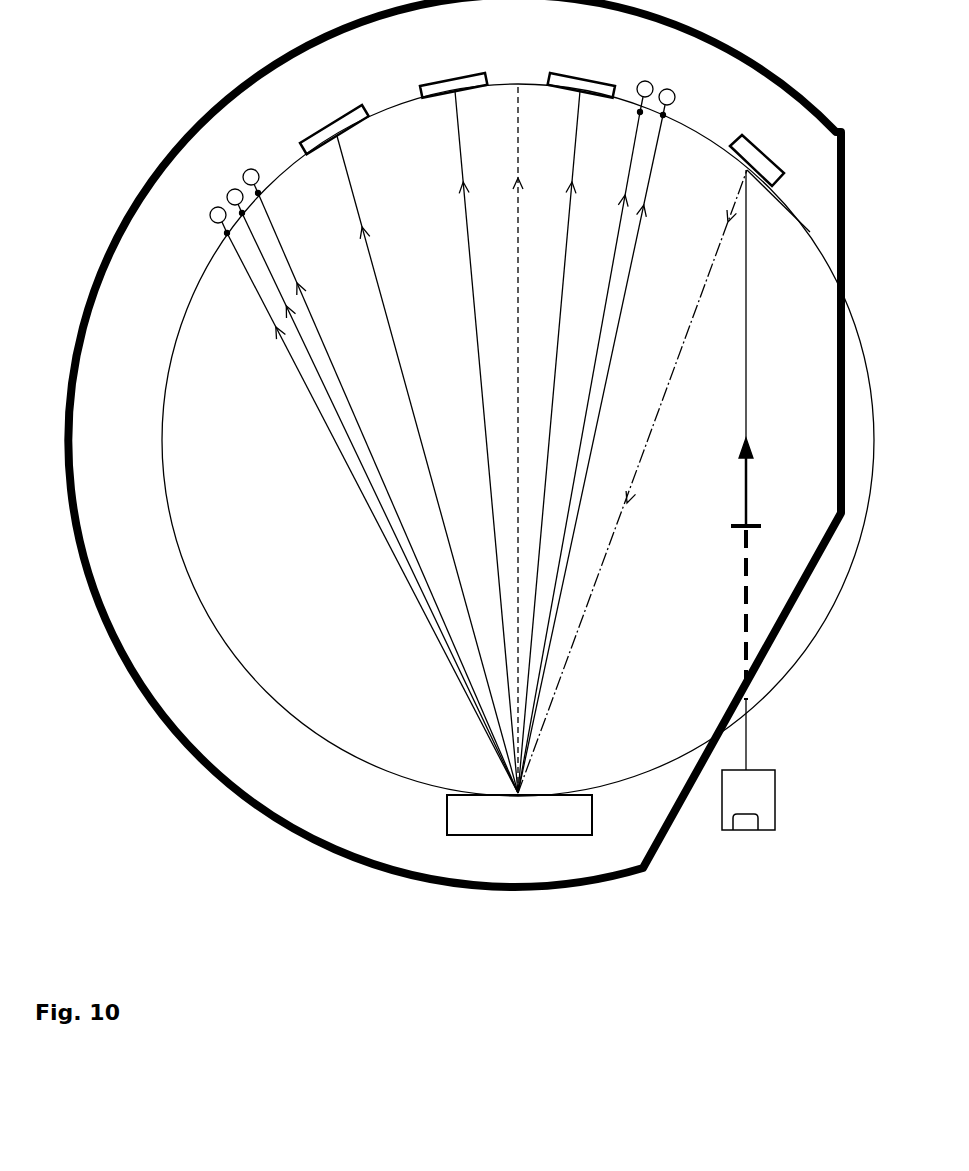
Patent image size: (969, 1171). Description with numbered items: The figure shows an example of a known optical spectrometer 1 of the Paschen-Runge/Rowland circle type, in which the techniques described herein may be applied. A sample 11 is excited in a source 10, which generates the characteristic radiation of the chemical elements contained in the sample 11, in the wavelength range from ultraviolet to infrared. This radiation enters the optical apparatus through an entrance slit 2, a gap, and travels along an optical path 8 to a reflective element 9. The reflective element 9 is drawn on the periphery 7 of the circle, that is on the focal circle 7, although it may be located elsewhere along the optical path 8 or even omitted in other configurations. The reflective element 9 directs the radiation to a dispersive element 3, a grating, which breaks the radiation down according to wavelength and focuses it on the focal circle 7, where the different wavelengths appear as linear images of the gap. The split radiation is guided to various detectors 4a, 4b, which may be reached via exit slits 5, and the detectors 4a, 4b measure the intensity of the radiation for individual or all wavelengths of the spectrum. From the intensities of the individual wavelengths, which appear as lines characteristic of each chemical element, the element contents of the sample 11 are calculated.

The optical spectrometer 1 is at (238, 799).
The entrance slit 2 is at (762, 524).
The dispersive element 3 is at (447, 812).
The detectors 4a is at (456, 80).
The detectors 4b is at (256, 170).
The exit slits 5 is at (668, 116).
The focal circle 7 is at (158, 445).
The optical path 8 is at (745, 488).
The reflective element 9 is at (760, 160).
The source 10 is at (776, 797).
The sample 11 is at (749, 830).